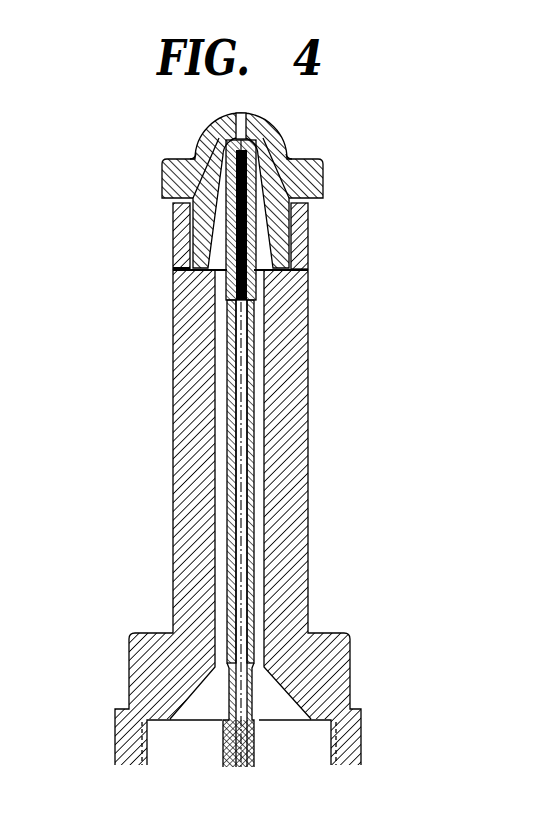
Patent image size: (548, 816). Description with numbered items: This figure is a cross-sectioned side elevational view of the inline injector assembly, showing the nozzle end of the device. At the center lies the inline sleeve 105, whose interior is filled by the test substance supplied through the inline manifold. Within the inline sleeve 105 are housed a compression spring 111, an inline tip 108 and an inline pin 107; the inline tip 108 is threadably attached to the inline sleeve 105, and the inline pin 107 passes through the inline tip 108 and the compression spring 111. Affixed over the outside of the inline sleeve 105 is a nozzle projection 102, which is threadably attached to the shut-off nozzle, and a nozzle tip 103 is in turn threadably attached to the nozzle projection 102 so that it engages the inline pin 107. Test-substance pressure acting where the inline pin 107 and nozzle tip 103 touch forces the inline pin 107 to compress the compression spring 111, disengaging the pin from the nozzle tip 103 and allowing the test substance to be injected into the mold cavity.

The nozzle projection 102 is at (308, 327).
The nozzle tip 103 is at (282, 127).
The inline sleeve 105 is at (260, 477).
The inline pin 107 is at (213, 125).
The inline tip 108 is at (197, 157).
The compression spring 111 is at (172, 275).